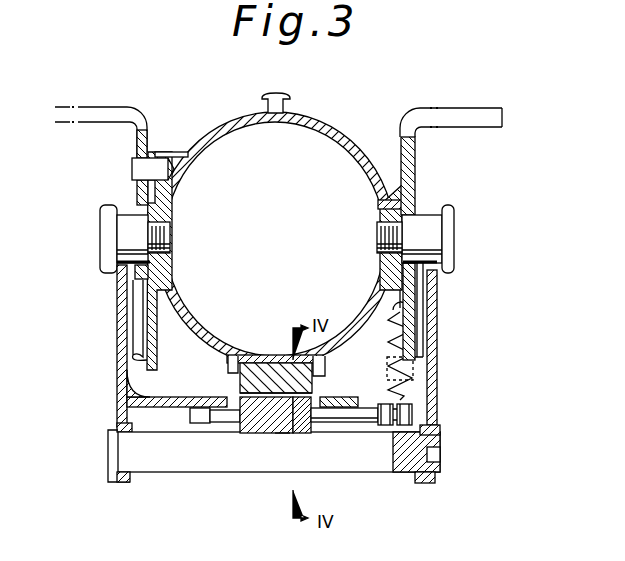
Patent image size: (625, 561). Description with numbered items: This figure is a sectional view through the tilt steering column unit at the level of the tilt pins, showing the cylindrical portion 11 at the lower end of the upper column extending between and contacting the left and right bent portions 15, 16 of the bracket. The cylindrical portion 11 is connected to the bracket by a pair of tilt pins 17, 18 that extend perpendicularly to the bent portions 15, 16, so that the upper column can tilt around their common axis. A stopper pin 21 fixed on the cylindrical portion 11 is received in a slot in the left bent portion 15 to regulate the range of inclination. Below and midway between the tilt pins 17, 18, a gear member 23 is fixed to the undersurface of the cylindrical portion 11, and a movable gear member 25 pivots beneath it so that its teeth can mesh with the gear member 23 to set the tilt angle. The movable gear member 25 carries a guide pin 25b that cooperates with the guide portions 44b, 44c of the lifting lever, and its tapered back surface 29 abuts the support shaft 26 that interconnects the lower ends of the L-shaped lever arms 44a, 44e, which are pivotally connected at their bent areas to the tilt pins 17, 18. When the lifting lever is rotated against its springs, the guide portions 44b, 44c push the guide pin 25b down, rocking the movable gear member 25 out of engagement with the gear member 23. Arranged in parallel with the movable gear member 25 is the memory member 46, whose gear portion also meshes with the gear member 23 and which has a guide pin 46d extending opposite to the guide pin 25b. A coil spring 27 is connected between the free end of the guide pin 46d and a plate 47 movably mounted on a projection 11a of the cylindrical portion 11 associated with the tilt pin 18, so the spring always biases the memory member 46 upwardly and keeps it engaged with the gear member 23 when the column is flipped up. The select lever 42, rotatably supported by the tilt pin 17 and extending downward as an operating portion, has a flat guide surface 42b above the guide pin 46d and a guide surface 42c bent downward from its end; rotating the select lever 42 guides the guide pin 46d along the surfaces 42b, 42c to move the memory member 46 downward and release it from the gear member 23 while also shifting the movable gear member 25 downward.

The cylindrical portion 11 is at (228, 122).
The projection 11a is at (388, 214).
The left bent portion 15 is at (418, 161).
The right bent portion 16 is at (138, 302).
The tilt pin 17 is at (104, 237).
The tilt pin 18 is at (453, 228).
The stopper pin 21 is at (135, 167).
The gear member 23 is at (238, 382).
The movable gear member 25 is at (247, 433).
The guide pin 25b is at (233, 425).
The support shaft 26 is at (125, 455).
The coil spring 27 is at (400, 388).
The tapered back surface 29 is at (283, 433).
The select lever 42 is at (140, 340).
The flat guide surface 42b is at (342, 397).
The guide surface 42c is at (355, 410).
The lever arm 44a is at (118, 393).
The guide portion 44b is at (155, 410).
The guide portion 44c is at (197, 427).
The lever arm 44e is at (436, 305).
The memory member 46 is at (302, 410).
The guide pin 46d is at (412, 413).
The plate 47 is at (395, 188).